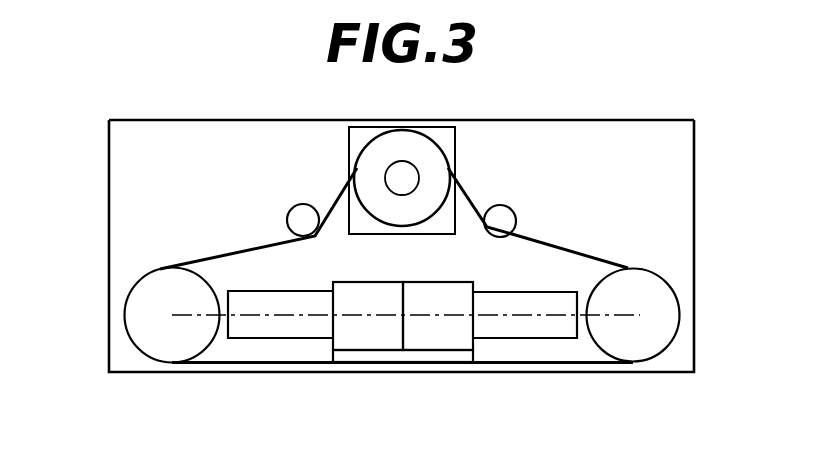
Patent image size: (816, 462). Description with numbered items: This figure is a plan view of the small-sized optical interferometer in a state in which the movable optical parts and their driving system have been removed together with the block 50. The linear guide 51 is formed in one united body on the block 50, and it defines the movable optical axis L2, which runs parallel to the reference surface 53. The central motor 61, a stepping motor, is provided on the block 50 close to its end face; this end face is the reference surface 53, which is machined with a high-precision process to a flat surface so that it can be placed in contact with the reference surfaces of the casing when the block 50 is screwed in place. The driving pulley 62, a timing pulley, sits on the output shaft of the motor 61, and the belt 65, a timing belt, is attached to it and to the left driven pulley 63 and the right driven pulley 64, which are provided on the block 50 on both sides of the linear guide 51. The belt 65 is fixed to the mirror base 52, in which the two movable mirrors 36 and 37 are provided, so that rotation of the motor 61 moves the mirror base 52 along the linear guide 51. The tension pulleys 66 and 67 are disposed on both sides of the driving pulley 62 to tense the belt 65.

The block 50 is at (108, 200).
The reference surface 53 is at (185, 120).
The motor 61 is at (442, 142).
The driving pulley 62 is at (390, 146).
The left driven pulley 63 is at (174, 344).
The right driven pulley 64 is at (636, 346).
The belt 65 is at (270, 363).
The tension pulley 66 is at (300, 218).
The tension pulley 67 is at (507, 218).
The movable mirror 36 is at (432, 296).
The movable mirror 37 is at (366, 296).
The linear guide 51 is at (506, 330).
The mirror base 52 is at (400, 355).
The movable optical axis L2 is at (553, 318).